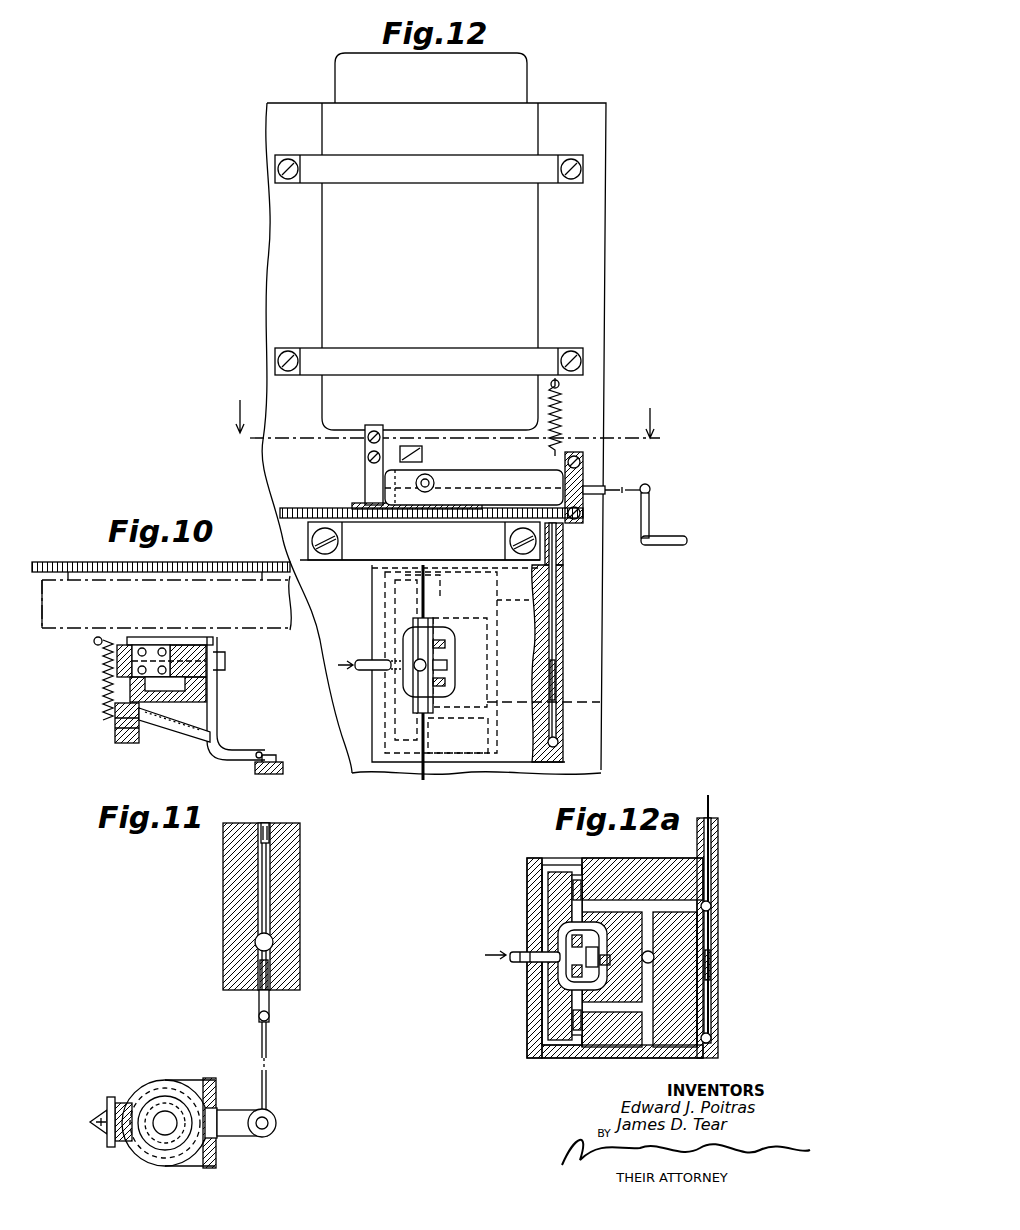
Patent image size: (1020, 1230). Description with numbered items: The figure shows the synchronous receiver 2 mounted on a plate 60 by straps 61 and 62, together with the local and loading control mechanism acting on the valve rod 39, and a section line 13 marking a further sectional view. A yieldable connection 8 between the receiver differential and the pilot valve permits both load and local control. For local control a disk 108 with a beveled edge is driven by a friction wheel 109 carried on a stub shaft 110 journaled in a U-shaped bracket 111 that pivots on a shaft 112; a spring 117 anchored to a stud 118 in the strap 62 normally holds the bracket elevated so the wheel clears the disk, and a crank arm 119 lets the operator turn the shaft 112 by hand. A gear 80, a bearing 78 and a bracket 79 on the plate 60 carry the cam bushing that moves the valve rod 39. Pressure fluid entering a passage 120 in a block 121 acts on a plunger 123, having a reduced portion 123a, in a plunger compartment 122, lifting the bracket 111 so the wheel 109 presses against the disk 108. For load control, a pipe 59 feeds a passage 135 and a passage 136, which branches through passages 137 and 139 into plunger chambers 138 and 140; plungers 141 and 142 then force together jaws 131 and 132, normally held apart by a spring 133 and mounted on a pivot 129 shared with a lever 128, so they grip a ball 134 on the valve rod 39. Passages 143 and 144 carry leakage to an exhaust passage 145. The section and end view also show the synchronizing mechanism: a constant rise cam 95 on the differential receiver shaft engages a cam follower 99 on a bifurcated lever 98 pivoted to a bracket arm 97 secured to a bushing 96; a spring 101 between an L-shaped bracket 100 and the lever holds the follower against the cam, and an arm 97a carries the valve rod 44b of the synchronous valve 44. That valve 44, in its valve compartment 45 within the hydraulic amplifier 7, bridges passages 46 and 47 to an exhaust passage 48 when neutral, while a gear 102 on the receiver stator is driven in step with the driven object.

In FIG. 12, the plate 60 is at (595, 133).
In FIG. 12, the synchronous receiver 2 is at (430, 266).
In FIG. 12, the strap 61 is at (429, 169).
In FIG. 12, the strap 62 is at (429, 361).
In FIG. 12, the section line 13 is at (445, 431).
In FIG. 12, the disk 108 is at (368, 497).
In FIG. 12, the stub shaft 110 is at (420, 478).
In FIG. 12, the U-shaped bracket 111 is at (500, 480).
In FIG. 12, the beveled driving wheel 109 is at (430, 477).
In FIG. 12, the spring 117 is at (562, 410).
In FIG. 12, the stud 118 is at (562, 386).
In FIG. 12, the yieldable connection 8 is at (551, 453).
In FIG. 12, the shaft 112 is at (610, 488).
In FIG. 12, the crank arm 119 is at (650, 518).
In FIG. 12, the gear 80 is at (300, 508).
In FIG. 12, the bracket 79 is at (424, 541).
In FIG. 12, the bearing 78 is at (320, 560).
In FIG. 12, the passage 137 is at (372, 578).
In FIG. 12A, the passage 137 is at (562, 872).
In FIG. 12, the plunger compartment 122 is at (566, 572).
In FIG. 12A, the plunger compartment 122 is at (716, 872).
In FIG. 12, the reduced central portion 123a is at (563, 603).
In FIG. 12A, the reduced central portion 123a is at (712, 906).
In FIG. 12, the block 121 is at (520, 642).
In FIG. 12A, the block 121 is at (680, 945).
In FIG. 12, the plunger 123 is at (563, 674).
In FIG. 12A, the plunger 123 is at (710, 965).
In FIG. 12, the exhaust passage 145 is at (565, 706).
In FIG. 12A, the exhaust passage 145 is at (655, 986).
In FIG. 12, the passage 120 is at (560, 742).
In FIG. 12A, the passage 120 is at (712, 1041).
In FIG. 12, the passage 136 is at (395, 607).
In FIG. 12A, the passage 136 is at (548, 873).
In FIG. 12, the plunger 141 is at (418, 603).
In FIG. 12A, the plunger 141 is at (572, 893).
In FIG. 12, the passage 143 is at (470, 622).
In FIG. 12A, the passage 143 is at (630, 905).
In FIG. 12, the plunger chamber 138 is at (430, 587).
In FIG. 12A, the plunger chamber 138 is at (610, 872).
In FIG. 12, the jaw 132 is at (432, 690).
In FIG. 12A, the jaw 132 is at (565, 982).
In FIG. 12, the plunger 142 is at (428, 732).
In FIG. 12A, the plunger 142 is at (560, 1024).
In FIG. 12, the plunger chamber 140 is at (424, 748).
In FIG. 12A, the plunger chamber 140 is at (578, 1036).
In FIG. 12, the passage 139 is at (400, 756).
In FIG. 12A, the passage 139 is at (556, 1046).
In FIG. 12, the passage 144 is at (468, 716).
In FIG. 12A, the passage 144 is at (618, 1006).
In FIG. 12, the valve rod 39 is at (422, 778).
In FIG. 12, the jaw 131 is at (432, 642).
In FIG. 12A, the jaw 131 is at (565, 938).
In FIG. 12, the pivot 129 is at (447, 658).
In FIG. 12A, the pivot 129 is at (530, 940).
In FIG. 12, the lever 128 is at (436, 673).
In FIG. 12A, the lever 128 is at (562, 996).
In FIG. 12, the spring 133 is at (420, 665).
In FIG. 12A, the spring 133 is at (558, 964).
In FIG. 12, the pipe 59 is at (355, 662).
In FIG. 12A, the pipe 59 is at (528, 954).
In FIG. 12, the passage 135 is at (400, 662).
In FIG. 12, the ball 134 is at (420, 668).
In FIG. 10, the gear 102 is at (100, 562).
In FIG. 10, the bushing 96 is at (210, 638).
In FIG. 11, the bushing 96 is at (140, 1085).
In FIG. 10, the bracket arm 97 is at (216, 690).
In FIG. 11, the bracket arm 97 is at (212, 1105).
In FIG. 10, the constant rise cylindrical cam 95 is at (132, 693).
In FIG. 11, the constant rise cylindrical cam 95 is at (133, 1140).
In FIG. 10, the L-shaped bracket 100 is at (100, 640).
In FIG. 11, the L-shaped bracket 100 is at (100, 1113).
In FIG. 10, the spring 101 is at (103, 670).
In FIG. 11, the spring 101 is at (97, 1127).
In FIG. 10, the cam follower 99 is at (118, 738).
In FIG. 11, the cam follower 99 is at (126, 1102).
In FIG. 10, the bifurcated lever 98 is at (170, 730).
In FIG. 11, the bifurcated lever 98 is at (195, 1080).
In FIG. 10, the arm 97a is at (260, 755).
In FIG. 11, the arm 97a is at (246, 1132).
In FIG. 10, the valve rod 44b is at (272, 754).
In FIG. 11, the valve rod 44b is at (267, 1048).
In FIG. 11, the hydraulic amplifier 7 is at (228, 876).
In FIG. 11, the passage 46 is at (272, 845).
In FIG. 11, the valve compartment 45 is at (272, 905).
In FIG. 11, the exhaust passage 48 is at (273, 942).
In FIG. 11, the passage 47 is at (258, 969).
In FIG. 11, the valve 44 is at (270, 1001).